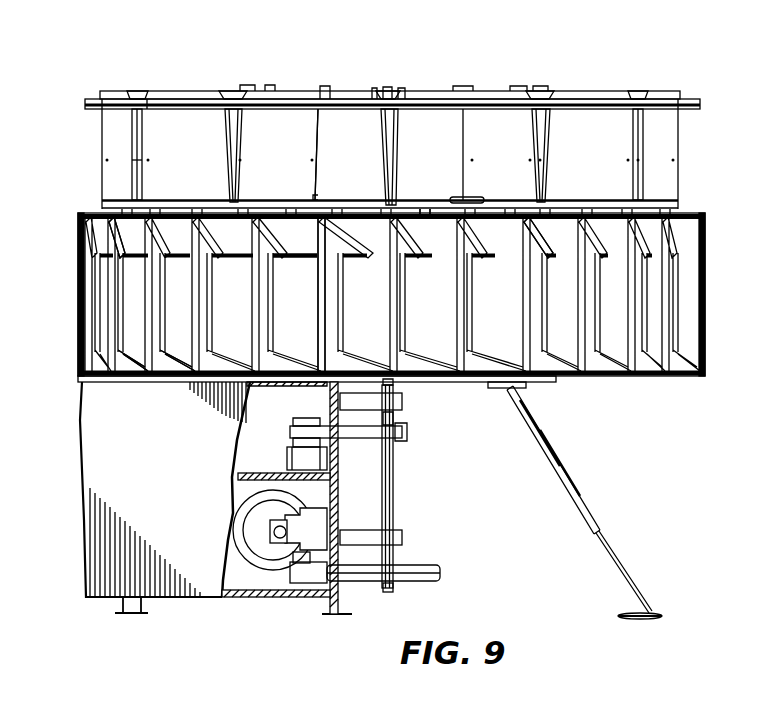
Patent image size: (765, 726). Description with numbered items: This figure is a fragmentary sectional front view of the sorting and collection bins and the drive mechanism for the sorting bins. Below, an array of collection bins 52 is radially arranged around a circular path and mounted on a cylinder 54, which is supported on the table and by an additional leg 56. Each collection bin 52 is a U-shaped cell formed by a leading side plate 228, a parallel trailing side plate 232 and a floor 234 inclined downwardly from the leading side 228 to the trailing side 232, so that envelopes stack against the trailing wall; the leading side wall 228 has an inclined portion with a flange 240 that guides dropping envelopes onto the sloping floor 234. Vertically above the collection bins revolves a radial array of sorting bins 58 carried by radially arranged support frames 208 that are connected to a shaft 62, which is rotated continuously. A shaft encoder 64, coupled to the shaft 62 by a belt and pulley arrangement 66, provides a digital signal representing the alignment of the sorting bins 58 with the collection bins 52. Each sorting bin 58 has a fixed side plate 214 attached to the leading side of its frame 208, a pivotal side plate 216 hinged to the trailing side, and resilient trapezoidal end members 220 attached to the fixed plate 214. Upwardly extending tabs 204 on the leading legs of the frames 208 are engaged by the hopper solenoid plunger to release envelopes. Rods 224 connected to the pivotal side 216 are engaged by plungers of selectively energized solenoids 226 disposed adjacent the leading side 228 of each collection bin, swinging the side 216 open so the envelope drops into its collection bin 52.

The collection bins 52 is at (130, 305).
The cylinder 54 is at (431, 380).
The leg 56 is at (566, 466).
The sorting bins 58 is at (330, 195).
The shaft 62 is at (397, 88).
The shaft encoder 64 is at (286, 450).
The belt and pulley arrangement 66 is at (349, 440).
The tabs 204 is at (538, 86).
The frame 208 is at (98, 109).
The fixed side plate 214 is at (240, 127).
The pivotal side plate 216 is at (232, 175).
The end members 220 is at (540, 130).
The rod 224 is at (478, 198).
The solenoids 226 is at (427, 209).
The leading side plate 228 is at (271, 299).
The trailing side plate 232 is at (320, 337).
The floor 234 is at (177, 376).
The flange 240 is at (112, 214).